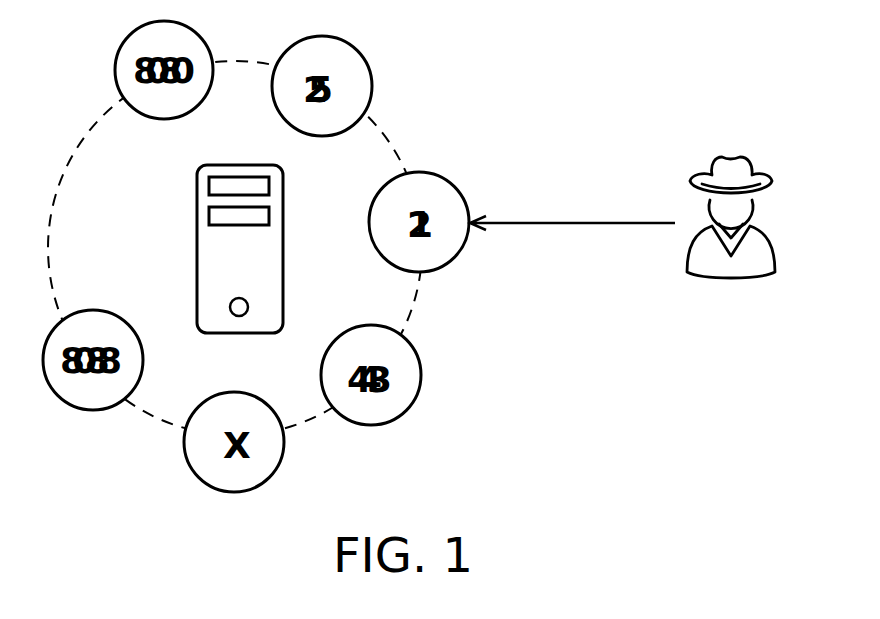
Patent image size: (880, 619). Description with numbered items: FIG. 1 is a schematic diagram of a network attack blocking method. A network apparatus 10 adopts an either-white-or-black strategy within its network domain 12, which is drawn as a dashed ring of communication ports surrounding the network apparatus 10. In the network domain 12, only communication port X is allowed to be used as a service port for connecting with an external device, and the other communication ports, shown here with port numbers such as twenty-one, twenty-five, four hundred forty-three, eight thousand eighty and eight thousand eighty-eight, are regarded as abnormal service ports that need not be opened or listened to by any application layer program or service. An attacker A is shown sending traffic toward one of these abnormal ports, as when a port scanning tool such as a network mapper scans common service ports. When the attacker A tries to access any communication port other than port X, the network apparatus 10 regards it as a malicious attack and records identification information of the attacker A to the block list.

The network apparatus 10 is at (197, 249).
The network domain 12 is at (392, 146).
The attacker A is at (738, 162).